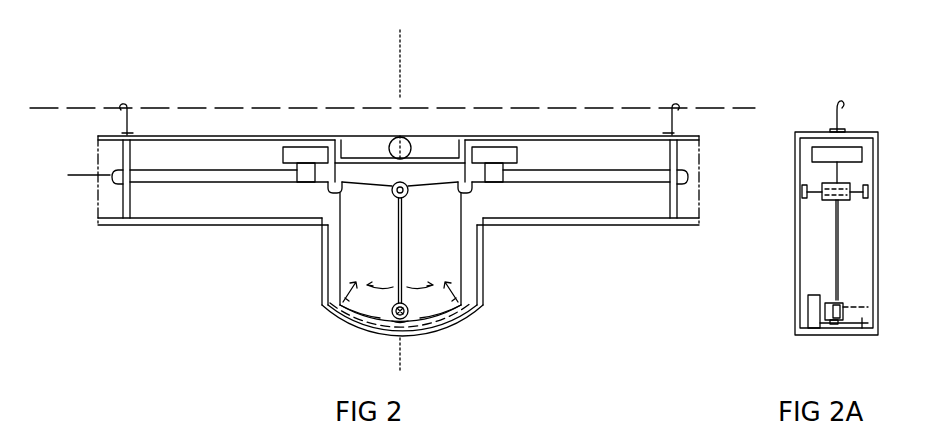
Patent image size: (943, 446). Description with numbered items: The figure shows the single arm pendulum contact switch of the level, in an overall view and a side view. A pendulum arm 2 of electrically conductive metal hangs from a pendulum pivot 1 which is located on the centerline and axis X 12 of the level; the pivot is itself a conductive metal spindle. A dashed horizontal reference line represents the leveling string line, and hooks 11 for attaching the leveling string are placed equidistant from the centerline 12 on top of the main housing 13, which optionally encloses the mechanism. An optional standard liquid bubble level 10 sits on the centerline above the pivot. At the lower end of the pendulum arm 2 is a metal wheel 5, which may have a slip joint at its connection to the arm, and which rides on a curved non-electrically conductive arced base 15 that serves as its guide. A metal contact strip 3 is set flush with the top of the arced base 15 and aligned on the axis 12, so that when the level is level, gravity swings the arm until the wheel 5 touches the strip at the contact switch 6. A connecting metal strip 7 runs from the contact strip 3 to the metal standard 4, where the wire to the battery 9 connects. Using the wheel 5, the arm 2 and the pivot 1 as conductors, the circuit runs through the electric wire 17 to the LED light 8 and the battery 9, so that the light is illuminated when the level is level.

In FIG. 2, the pendulum pivot 1 is at (402, 183).
In FIG. 2A, the pendulum pivot 1 is at (830, 185).
In FIG. 2, the pendulum arm 2 is at (407, 240).
In FIG. 2A, the pendulum arm 2 is at (835, 238).
In FIG. 2, the metal contact strip 3 is at (404, 326).
In FIG. 2A, the metal contact strip 3 is at (840, 323).
In FIG. 2, the metal standard 4 is at (350, 285).
In FIG. 2A, the metal standard 4 is at (808, 313).
In FIG. 2, the metal wheel 5 is at (385, 315).
In FIG. 2A, the metal wheel 5 is at (840, 315).
In FIG. 2, the contact switch 6 is at (398, 322).
In FIG. 2, the metal strip 7 is at (458, 312).
In FIG. 2, the LED light 8 is at (115, 168).
In FIG. 2, the battery 9 is at (305, 148).
In FIG. 2A, the battery 9 is at (833, 157).
In FIG. 2, the liquid bubble level 10 is at (397, 137).
In FIG. 2, the hooks 11 is at (123, 106).
In FIG. 2A, the hooks 11 is at (833, 98).
In FIG. 2, the centerline and axis X 12 is at (402, 60).
In FIG. 2, the main housing 13 is at (238, 224).
In FIG. 2A, the main housing 13 is at (877, 257).
In FIG. 2A, the arced base 15 is at (850, 319).
In FIG. 2, the electric wire to lights 17 is at (582, 105).